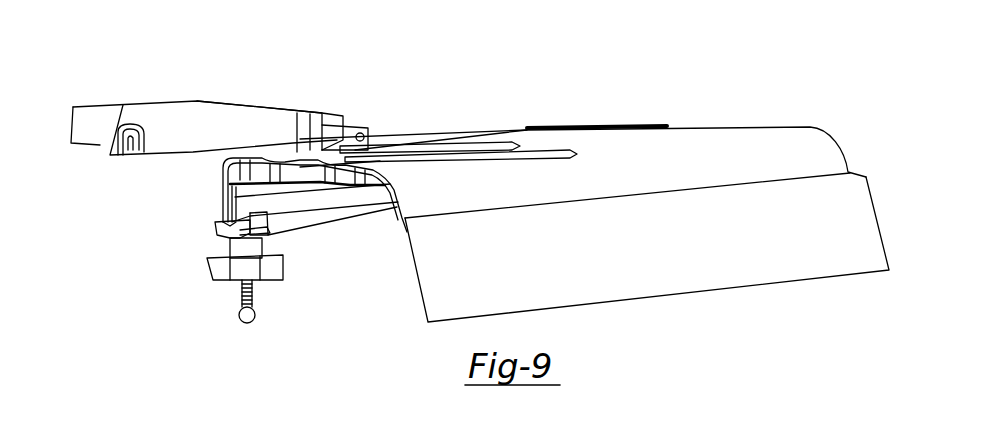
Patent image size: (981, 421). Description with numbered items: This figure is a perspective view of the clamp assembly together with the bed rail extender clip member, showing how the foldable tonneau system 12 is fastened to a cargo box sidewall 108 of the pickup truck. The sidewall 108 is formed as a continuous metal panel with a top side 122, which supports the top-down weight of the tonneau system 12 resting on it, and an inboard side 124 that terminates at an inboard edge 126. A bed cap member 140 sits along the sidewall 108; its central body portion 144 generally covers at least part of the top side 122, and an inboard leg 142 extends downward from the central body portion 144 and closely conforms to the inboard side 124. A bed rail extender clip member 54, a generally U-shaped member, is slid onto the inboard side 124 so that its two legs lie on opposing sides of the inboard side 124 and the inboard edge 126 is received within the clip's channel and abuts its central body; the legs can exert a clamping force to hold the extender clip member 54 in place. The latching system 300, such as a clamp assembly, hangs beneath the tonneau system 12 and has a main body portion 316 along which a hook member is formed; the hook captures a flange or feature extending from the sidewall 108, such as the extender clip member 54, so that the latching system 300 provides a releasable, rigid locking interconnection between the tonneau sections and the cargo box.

The foldable tonneau system 12 is at (703, 63).
The bed cap member 140 is at (740, 110).
The central body portion 144 is at (530, 143).
The top side 122 is at (350, 203).
The inboard leg 142 is at (224, 187).
The inboard edge 126 is at (227, 220).
The main body portion 316 is at (217, 230).
The bed rail extender clip member 54 is at (272, 203).
The inboard side 124 is at (333, 201).
The left sidewall 108 is at (450, 268).
The latching system 300 is at (213, 337).